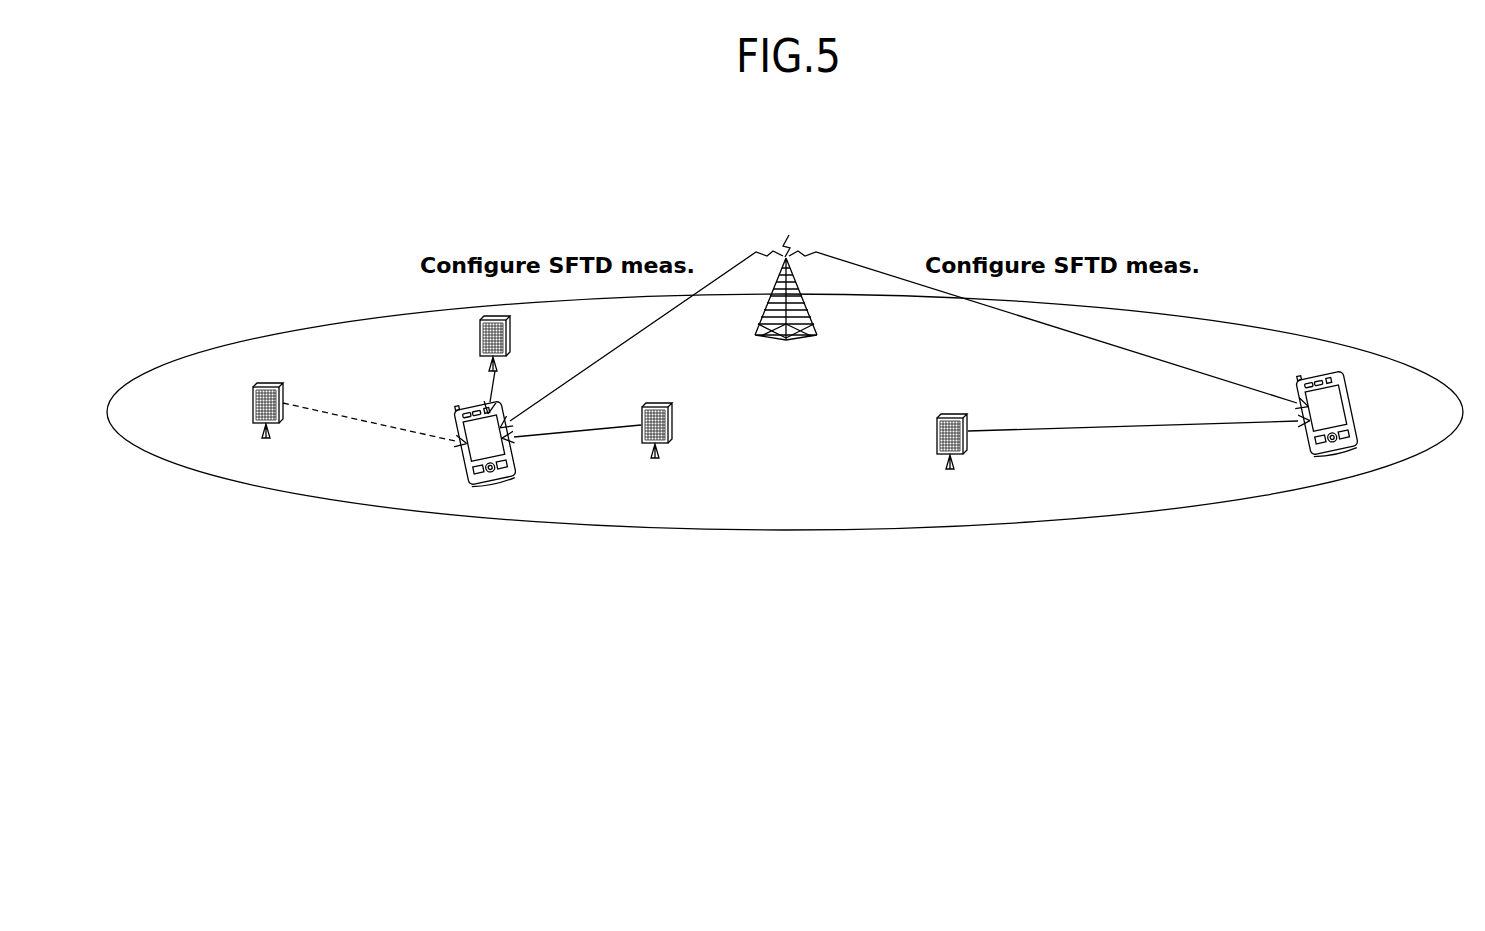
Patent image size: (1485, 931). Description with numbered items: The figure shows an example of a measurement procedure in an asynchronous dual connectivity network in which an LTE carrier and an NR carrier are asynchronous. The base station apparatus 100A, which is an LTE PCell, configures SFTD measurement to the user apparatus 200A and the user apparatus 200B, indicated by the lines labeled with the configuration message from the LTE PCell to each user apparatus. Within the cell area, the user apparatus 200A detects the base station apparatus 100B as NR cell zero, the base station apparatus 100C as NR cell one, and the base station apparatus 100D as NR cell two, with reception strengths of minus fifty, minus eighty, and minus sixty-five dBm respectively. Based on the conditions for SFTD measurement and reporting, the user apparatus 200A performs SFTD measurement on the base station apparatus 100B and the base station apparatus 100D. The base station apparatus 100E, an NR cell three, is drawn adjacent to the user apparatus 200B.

The base station apparatus 100A is at (814, 198).
The base station apparatus 100B is at (510, 325).
The base station apparatus 100C is at (276, 425).
The base station apparatus 100D is at (662, 402).
The base station apparatus 100E is at (940, 453).
The user apparatus 200A is at (500, 481).
The user apparatus 200B is at (1327, 453).